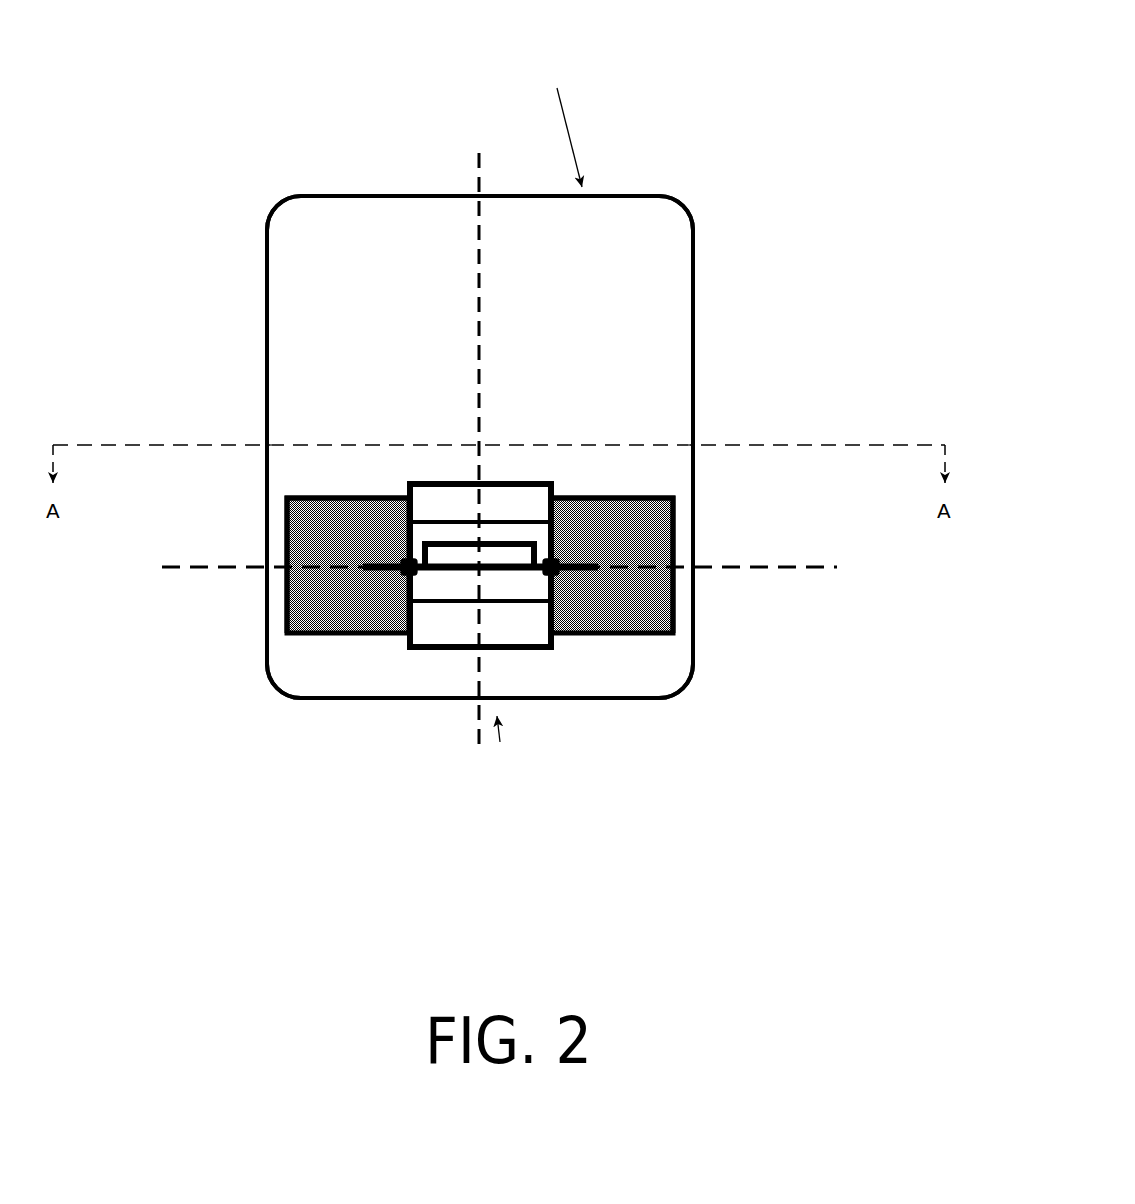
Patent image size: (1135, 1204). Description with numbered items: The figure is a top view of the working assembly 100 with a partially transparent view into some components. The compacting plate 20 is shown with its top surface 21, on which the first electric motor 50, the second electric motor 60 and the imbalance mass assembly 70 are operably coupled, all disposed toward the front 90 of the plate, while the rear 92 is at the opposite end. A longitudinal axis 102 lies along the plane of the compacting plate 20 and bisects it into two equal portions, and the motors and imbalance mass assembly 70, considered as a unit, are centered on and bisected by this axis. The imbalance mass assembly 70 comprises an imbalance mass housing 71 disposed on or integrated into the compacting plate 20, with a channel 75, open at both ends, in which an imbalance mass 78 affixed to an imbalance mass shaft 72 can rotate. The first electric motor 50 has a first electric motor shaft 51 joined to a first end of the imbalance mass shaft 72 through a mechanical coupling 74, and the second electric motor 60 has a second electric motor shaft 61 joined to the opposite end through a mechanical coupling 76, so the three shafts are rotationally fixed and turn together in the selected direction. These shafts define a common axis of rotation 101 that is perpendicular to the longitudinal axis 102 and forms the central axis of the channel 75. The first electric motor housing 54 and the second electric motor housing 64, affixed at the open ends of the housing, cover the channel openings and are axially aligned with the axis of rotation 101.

The working assembly 100 is at (735, 70).
The compacting plate 20 is at (665, 233).
The top surface 21 is at (653, 348).
The longitudinal axis 102 is at (478, 163).
The axis of rotation 101 is at (215, 566).
The rear 92 is at (557, 88).
The front 90 is at (500, 742).
The first electric motor 50 is at (300, 576).
The first electric motor housing 54 is at (285, 525).
The second electric motor 60 is at (662, 580).
The second electric motor housing 64 is at (672, 522).
The imbalance mass assembly 70 is at (452, 632).
The imbalance mass housing 71 is at (525, 481).
The channel 75 is at (515, 583).
The imbalance mass 78 is at (458, 555).
The imbalance mass shaft 72 is at (434, 572).
The mechanical coupling 74 is at (403, 568).
The mechanical coupling 76 is at (555, 567).
The first electric motor shaft 51 is at (400, 572).
The second electric motor shaft 61 is at (557, 568).